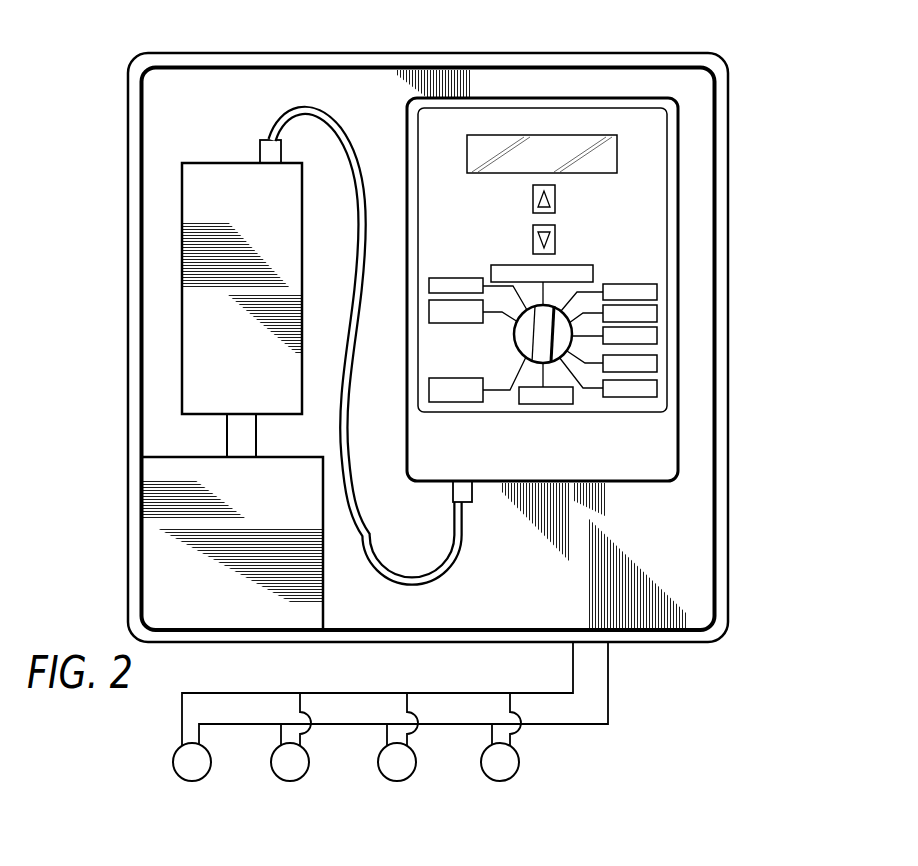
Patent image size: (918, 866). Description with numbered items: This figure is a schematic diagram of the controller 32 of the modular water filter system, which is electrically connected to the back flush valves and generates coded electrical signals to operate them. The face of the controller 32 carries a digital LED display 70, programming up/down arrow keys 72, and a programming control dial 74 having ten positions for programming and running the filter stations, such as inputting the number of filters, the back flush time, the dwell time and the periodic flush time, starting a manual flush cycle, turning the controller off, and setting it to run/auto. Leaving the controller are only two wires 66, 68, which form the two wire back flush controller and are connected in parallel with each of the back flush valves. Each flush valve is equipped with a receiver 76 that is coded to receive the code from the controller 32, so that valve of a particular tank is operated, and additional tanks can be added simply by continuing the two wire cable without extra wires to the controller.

The controller 32 is at (180, 46).
The wire 66 is at (572, 676).
The wire 68 is at (608, 672).
The digital LED display 70 is at (573, 137).
The programming up/down arrow keys 72 is at (597, 213).
The programming control dial 74 is at (560, 337).
The receiver 76 is at (521, 807).